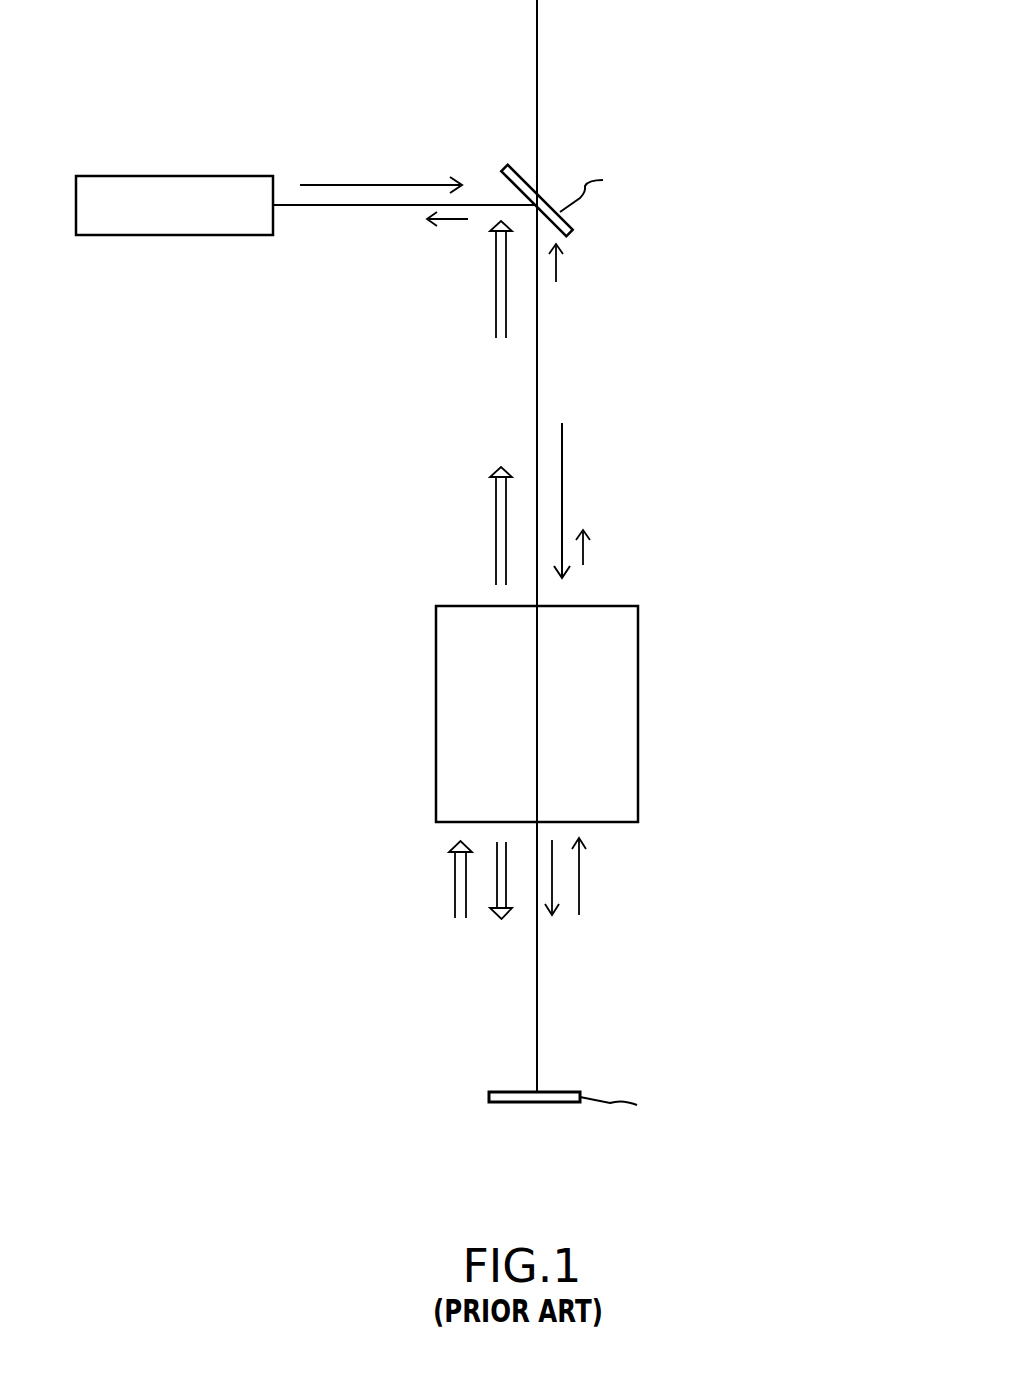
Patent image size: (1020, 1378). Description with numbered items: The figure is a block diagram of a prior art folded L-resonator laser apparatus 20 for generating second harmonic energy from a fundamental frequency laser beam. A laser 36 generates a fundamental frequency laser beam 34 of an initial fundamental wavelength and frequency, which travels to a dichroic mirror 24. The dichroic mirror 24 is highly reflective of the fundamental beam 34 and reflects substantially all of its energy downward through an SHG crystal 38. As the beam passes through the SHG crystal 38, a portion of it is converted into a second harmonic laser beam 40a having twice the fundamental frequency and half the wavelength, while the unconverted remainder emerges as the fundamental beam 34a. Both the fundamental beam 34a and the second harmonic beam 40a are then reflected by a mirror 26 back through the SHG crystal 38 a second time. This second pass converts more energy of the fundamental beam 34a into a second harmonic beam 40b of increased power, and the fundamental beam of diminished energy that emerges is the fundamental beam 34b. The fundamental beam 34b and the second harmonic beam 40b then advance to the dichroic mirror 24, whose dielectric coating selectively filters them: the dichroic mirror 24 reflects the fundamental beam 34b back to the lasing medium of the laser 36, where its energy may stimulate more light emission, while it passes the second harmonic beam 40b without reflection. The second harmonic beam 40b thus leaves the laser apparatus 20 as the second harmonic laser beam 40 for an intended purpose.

The folded L-resonator laser apparatus 20 is at (266, 1144).
The dichroic mirror 24 is at (507, 167).
The mirror 26 is at (500, 1105).
The fundamental frequency laser beam 34 is at (360, 185).
The fundamental beam emerging from the SHG crystal 34a is at (552, 903).
The diminished fundamental beam 34b is at (452, 220).
The laser 36 is at (196, 176).
The SHG crystal 38 is at (640, 665).
The second harmonic laser beam 40 is at (537, 33).
The second harmonic laser beam from first pass 40a is at (445, 968).
The second harmonic beam from second pass 40b is at (496, 313).